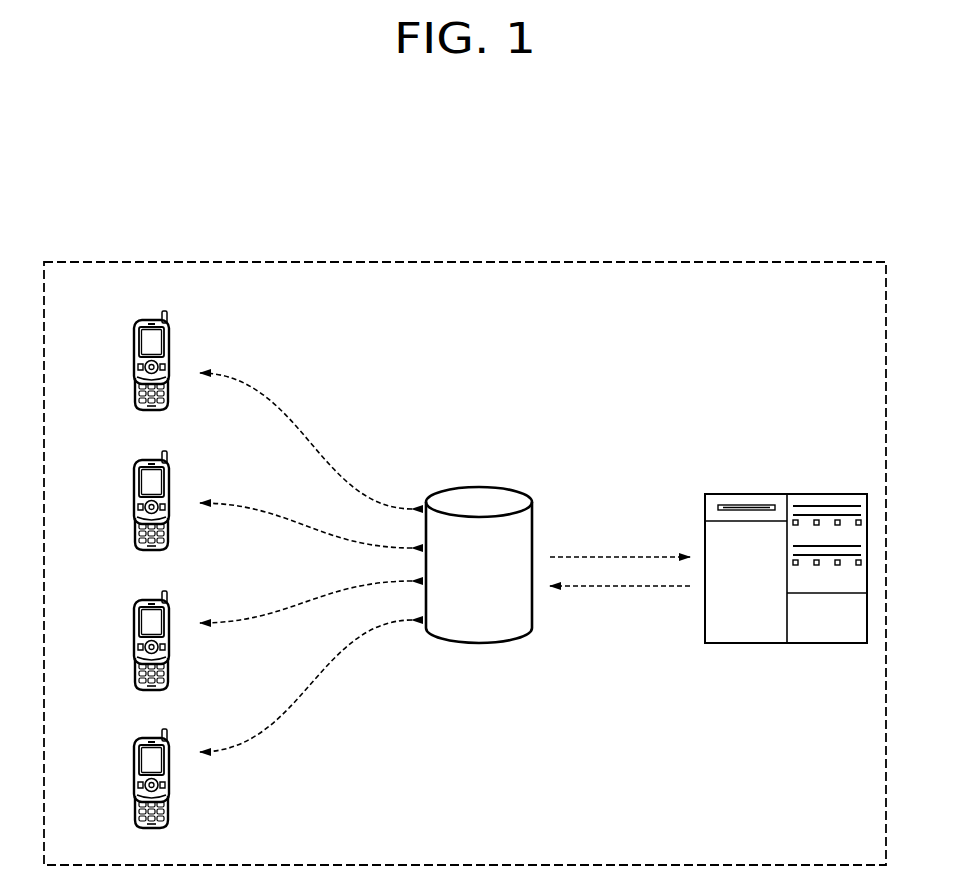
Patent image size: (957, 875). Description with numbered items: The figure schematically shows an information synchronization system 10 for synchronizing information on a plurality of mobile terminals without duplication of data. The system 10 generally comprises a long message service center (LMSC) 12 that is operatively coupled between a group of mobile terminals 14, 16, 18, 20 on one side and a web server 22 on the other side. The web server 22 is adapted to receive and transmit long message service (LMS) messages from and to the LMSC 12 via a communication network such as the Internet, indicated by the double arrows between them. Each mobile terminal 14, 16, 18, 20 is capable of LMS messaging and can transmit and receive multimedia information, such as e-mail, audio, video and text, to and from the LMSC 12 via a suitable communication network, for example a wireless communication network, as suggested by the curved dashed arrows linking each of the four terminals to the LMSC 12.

The information synchronization system 10 is at (466, 262).
The long message service center (LMSC) 12 is at (480, 500).
The mobile terminal 14 is at (133, 345).
The mobile terminal 16 is at (133, 483).
The mobile terminal 18 is at (133, 623).
The mobile terminal 20 is at (133, 761).
The web server 22 is at (776, 494).